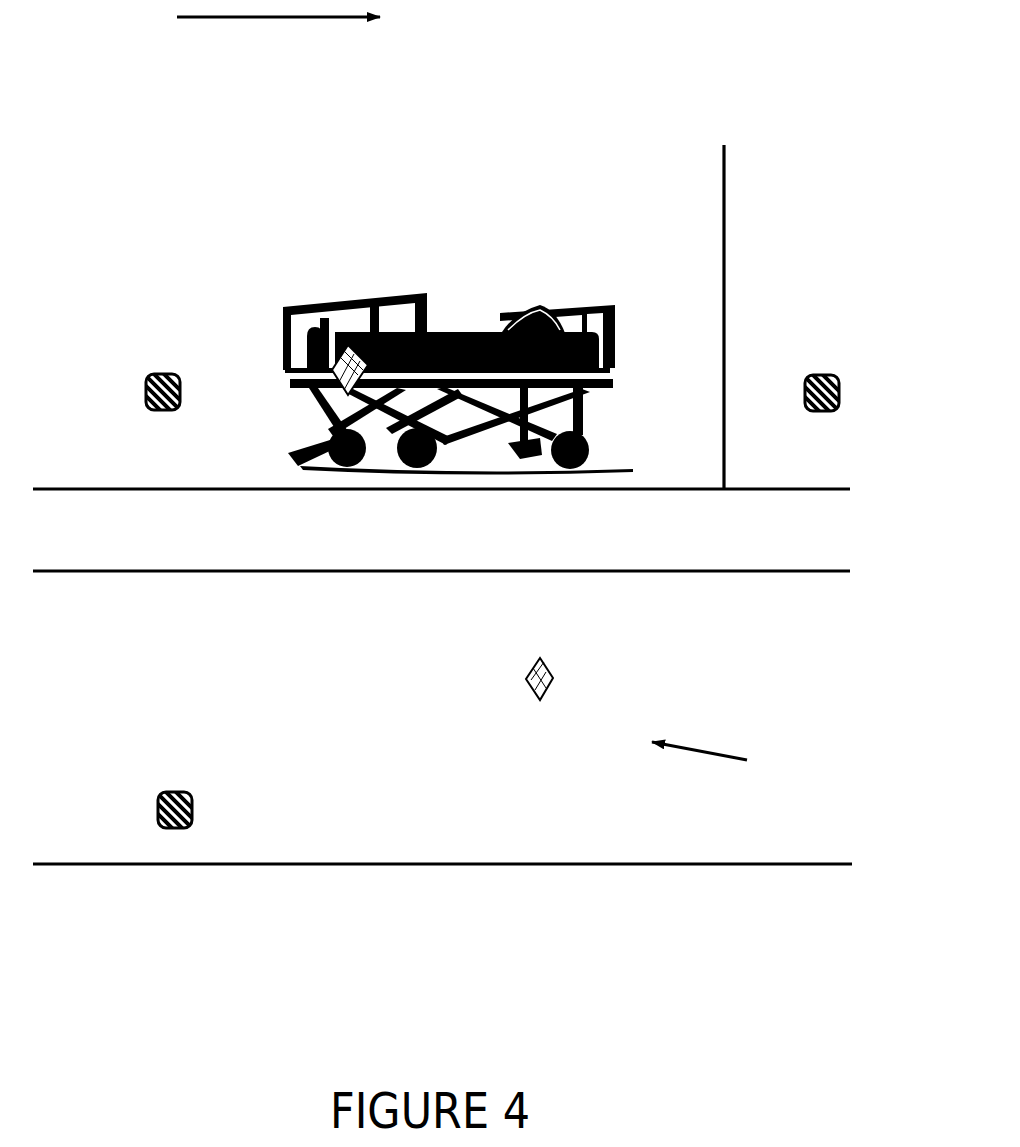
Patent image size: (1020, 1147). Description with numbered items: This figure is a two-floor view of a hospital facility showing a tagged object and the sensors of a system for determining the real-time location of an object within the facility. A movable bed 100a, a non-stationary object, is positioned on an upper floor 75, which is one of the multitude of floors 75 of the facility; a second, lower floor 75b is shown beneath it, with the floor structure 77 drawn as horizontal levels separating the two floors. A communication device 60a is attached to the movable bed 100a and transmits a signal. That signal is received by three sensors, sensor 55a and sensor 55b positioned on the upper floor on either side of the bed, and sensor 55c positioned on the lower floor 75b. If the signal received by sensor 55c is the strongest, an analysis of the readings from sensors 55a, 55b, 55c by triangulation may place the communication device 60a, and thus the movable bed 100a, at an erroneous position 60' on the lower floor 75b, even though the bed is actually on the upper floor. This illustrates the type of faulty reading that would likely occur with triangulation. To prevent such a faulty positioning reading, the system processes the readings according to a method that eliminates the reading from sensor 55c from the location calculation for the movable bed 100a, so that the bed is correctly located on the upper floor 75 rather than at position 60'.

The floor 75 is at (263, 20).
The floor 75b is at (723, 759).
The track / hospital corridor lane 77 is at (228, 540).
The movable bed 100a is at (508, 290).
The communication device 60a is at (336, 325).
The position 60' is at (607, 670).
The sensor 55a is at (148, 385).
The sensor 55b is at (826, 375).
The sensor 55c is at (176, 792).